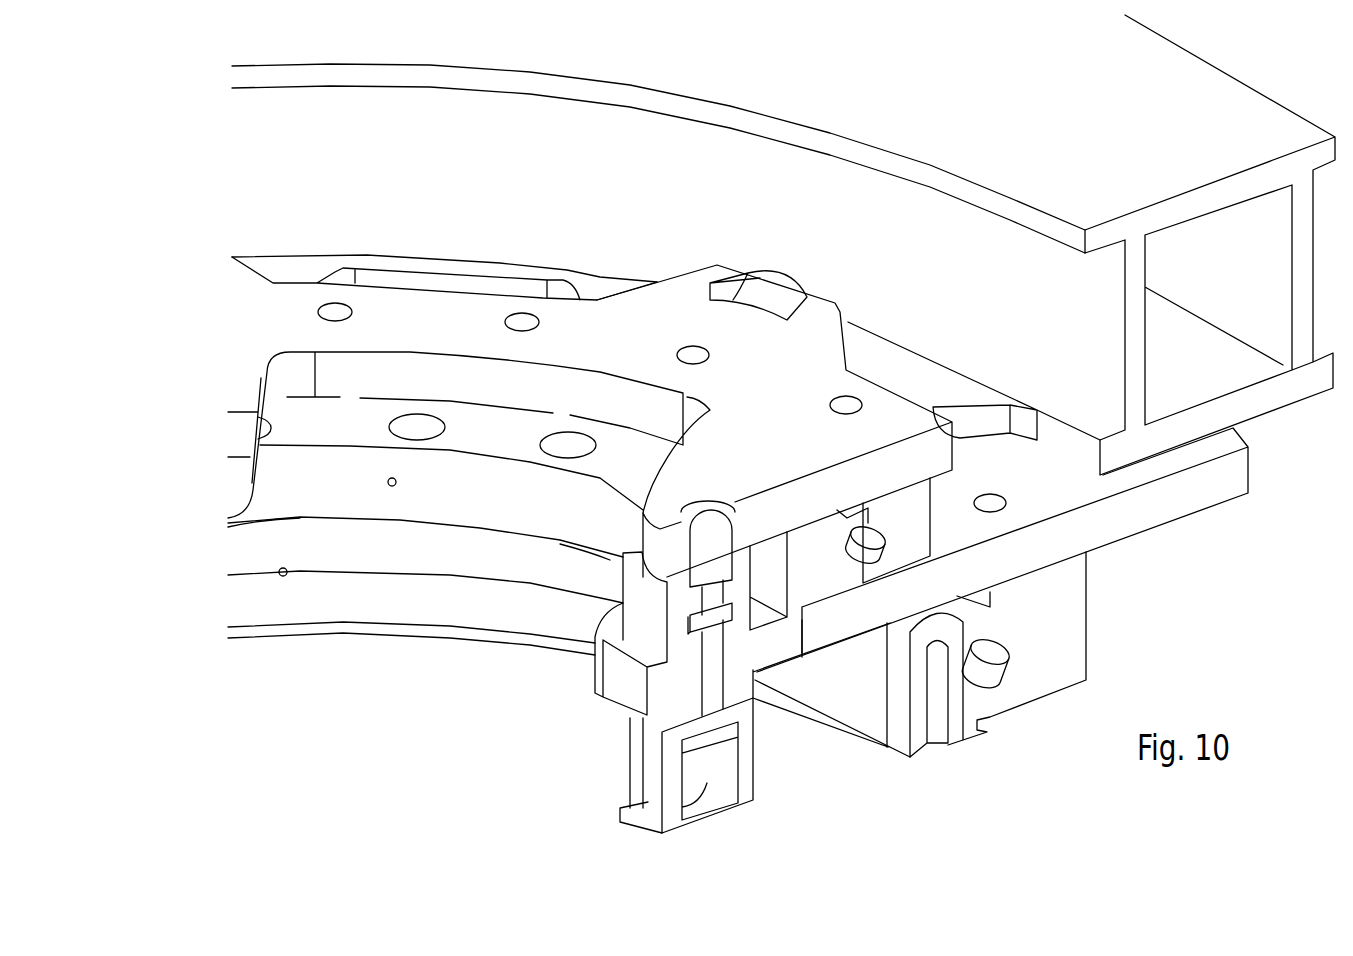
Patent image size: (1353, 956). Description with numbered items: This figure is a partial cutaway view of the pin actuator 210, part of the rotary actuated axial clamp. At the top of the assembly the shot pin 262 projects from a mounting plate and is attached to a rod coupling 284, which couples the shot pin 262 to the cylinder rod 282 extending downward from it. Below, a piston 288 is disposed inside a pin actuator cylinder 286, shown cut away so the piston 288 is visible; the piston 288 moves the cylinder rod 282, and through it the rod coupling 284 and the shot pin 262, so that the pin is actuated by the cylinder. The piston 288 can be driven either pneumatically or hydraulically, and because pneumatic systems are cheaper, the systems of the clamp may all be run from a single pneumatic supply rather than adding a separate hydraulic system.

The shot pin 262 is at (707, 523).
The rod coupling 284 is at (688, 630).
The cylinder rod 282 is at (713, 675).
The pin actuator cylinder 286 is at (742, 743).
The piston 288 is at (687, 803).
The pin actuator 210 is at (768, 829).